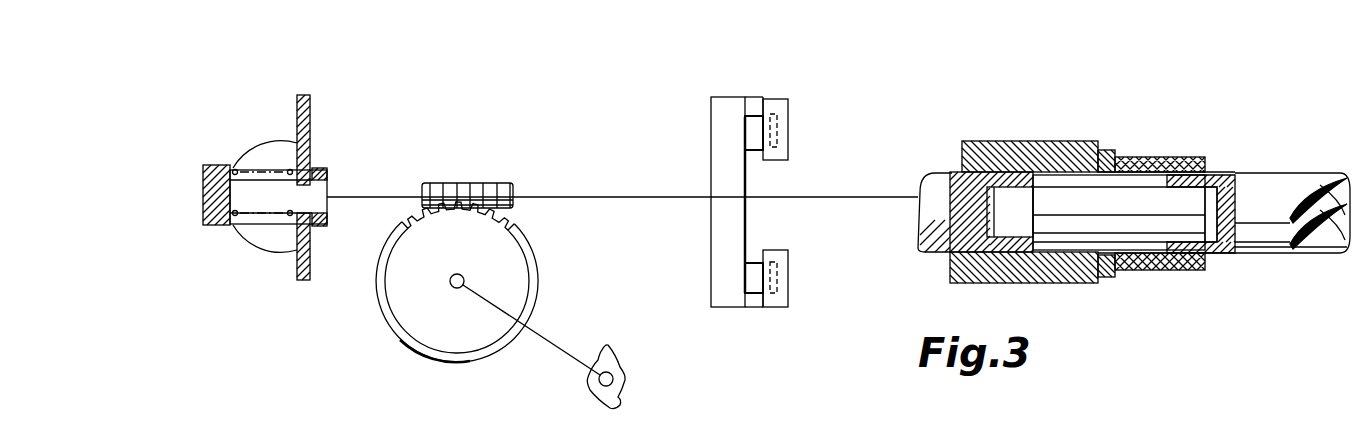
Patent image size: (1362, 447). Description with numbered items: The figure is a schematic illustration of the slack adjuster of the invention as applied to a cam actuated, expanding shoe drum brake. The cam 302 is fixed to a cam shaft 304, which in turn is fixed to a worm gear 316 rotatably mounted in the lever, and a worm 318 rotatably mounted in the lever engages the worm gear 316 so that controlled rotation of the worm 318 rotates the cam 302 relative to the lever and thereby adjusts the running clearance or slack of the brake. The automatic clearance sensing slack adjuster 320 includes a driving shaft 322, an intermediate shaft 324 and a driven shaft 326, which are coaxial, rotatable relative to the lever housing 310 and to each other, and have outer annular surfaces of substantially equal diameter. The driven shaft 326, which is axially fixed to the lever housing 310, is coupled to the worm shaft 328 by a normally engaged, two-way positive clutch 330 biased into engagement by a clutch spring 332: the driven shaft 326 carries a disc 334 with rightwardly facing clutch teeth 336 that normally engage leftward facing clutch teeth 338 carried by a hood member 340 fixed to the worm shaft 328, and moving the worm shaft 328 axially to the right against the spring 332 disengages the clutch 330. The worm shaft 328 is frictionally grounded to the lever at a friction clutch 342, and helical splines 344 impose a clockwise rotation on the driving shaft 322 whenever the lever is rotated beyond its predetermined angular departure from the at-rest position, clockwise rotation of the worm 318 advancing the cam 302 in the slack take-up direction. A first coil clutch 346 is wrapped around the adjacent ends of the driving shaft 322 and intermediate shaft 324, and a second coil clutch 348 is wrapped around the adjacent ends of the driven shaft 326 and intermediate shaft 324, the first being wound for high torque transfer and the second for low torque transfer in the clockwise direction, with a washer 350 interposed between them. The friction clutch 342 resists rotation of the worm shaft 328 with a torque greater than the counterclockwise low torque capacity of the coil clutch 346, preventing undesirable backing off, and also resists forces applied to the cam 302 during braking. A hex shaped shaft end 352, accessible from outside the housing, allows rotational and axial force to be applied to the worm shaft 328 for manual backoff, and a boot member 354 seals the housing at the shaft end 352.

The cam 302 is at (630, 377).
The cam shaft 304 is at (558, 343).
The lever housing 310 is at (305, 135).
The worm gear 316 is at (418, 328).
The worm 318 is at (440, 182).
The automatic clearance sensing slack adjuster 320 is at (1002, 128).
The driving shaft 322 is at (1260, 172).
The intermediate shaft 324 is at (1142, 238).
The driven shaft 326 is at (935, 173).
The worm shaft 328 is at (550, 197).
The two-way positive clutch 330 is at (743, 88).
The clutch spring 332 is at (253, 171).
The disc 334 is at (747, 183).
The clutch teeth 336 is at (745, 132).
The clutch teeth 338 is at (777, 300).
The hood member 340 is at (737, 308).
The friction clutch 342 is at (322, 170).
The helical splines 344 is at (1320, 188).
The first coil clutch 346 is at (1187, 157).
The second coil clutch 348 is at (1090, 141).
The washer 350 is at (1115, 150).
The hex shaped shaft end 352 is at (213, 177).
The boot member 354 is at (263, 243).